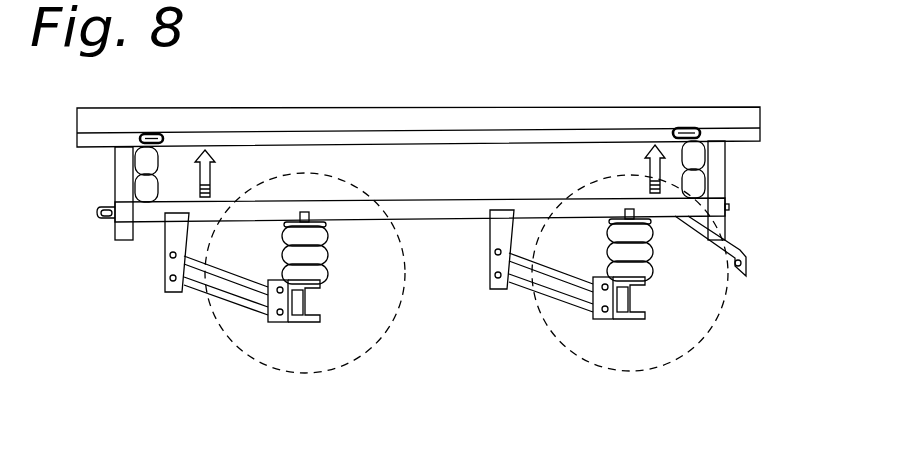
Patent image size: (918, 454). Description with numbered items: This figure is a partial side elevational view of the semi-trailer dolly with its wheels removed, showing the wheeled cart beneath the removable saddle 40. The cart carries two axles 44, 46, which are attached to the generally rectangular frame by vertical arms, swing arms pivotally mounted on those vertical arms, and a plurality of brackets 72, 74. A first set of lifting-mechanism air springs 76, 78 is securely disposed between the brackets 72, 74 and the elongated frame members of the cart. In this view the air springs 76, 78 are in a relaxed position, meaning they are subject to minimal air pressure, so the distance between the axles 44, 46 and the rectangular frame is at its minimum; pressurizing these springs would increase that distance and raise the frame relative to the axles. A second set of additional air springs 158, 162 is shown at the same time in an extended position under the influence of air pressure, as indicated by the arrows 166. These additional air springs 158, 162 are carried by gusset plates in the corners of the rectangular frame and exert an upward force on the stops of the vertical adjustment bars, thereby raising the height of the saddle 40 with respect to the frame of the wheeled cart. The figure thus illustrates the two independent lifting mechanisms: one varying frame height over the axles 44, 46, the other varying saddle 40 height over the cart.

The removable saddle 40 is at (398, 199).
The axle 44 is at (310, 298).
The axle 46 is at (642, 298).
The bracket 72 is at (278, 323).
The bracket 74 is at (607, 321).
The air spring 76 is at (328, 258).
The air spring 78 is at (653, 261).
The air spring 158 is at (116, 161).
The air spring 162 is at (705, 174).
The arrow 166 is at (223, 167).